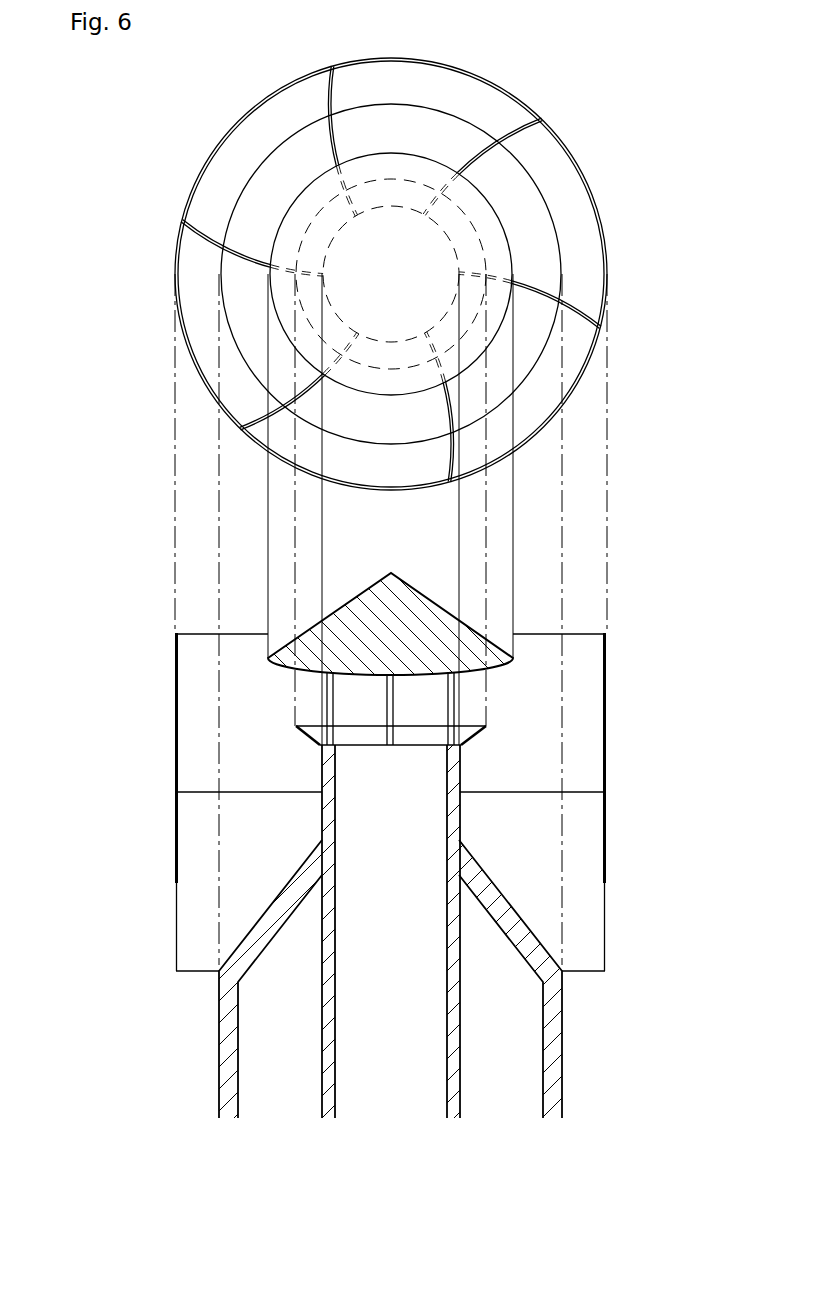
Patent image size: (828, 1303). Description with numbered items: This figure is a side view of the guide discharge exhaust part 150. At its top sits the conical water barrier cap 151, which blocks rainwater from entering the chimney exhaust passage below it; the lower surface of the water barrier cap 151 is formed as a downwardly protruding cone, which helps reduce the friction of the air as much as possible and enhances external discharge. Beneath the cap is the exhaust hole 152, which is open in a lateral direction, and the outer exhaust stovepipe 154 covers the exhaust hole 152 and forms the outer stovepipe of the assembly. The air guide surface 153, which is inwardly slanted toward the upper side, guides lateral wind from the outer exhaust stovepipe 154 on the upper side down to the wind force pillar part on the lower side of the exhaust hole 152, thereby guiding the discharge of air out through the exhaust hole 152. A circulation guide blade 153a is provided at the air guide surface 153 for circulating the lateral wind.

The guide discharge exhaust part 150 is at (137, 94).
The conical water barrier cap 151 is at (323, 616).
The exhaust hole 152 is at (488, 691).
The air guide surface 153 is at (518, 915).
The circulation guide blade 153a is at (176, 937).
The outer exhaust stovepipe 154 is at (176, 707).